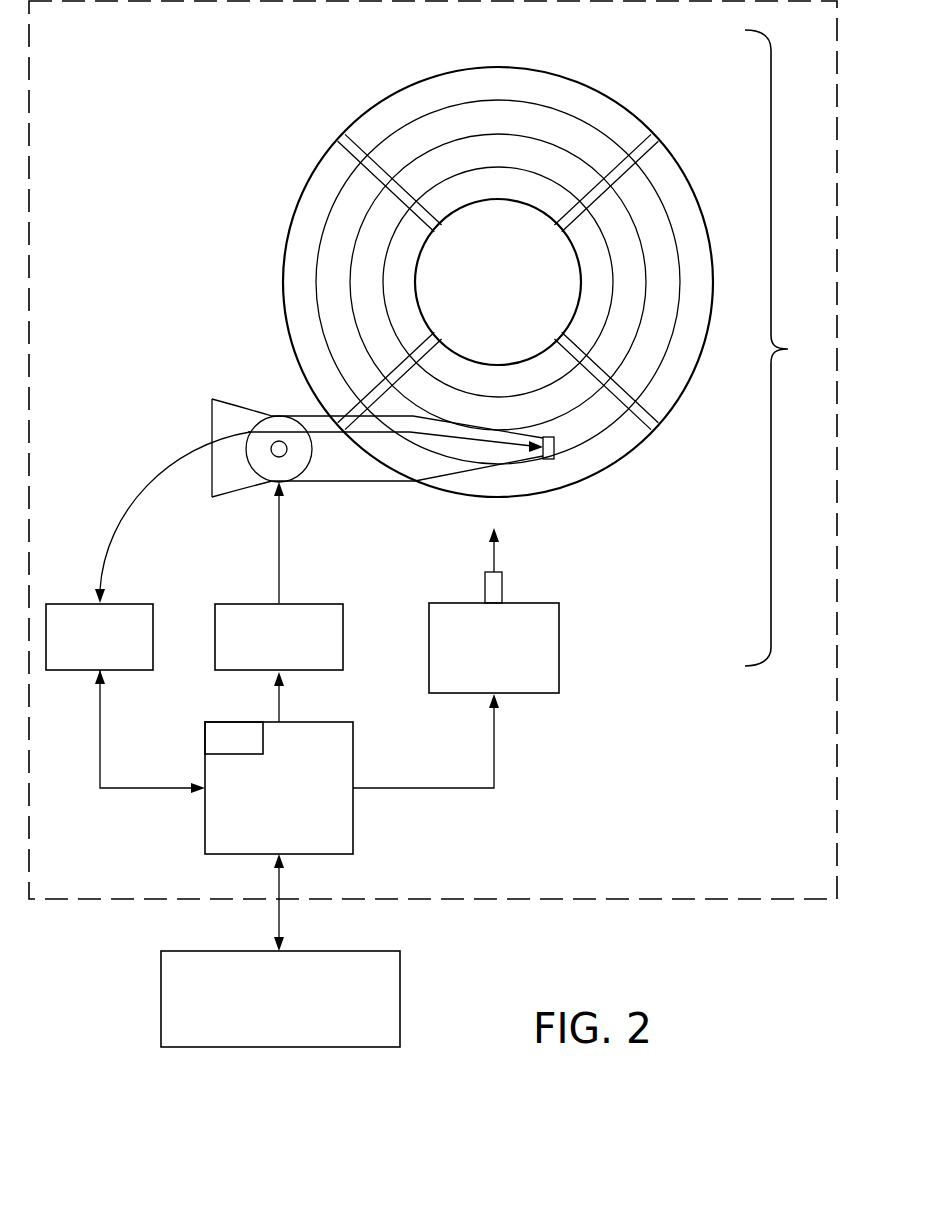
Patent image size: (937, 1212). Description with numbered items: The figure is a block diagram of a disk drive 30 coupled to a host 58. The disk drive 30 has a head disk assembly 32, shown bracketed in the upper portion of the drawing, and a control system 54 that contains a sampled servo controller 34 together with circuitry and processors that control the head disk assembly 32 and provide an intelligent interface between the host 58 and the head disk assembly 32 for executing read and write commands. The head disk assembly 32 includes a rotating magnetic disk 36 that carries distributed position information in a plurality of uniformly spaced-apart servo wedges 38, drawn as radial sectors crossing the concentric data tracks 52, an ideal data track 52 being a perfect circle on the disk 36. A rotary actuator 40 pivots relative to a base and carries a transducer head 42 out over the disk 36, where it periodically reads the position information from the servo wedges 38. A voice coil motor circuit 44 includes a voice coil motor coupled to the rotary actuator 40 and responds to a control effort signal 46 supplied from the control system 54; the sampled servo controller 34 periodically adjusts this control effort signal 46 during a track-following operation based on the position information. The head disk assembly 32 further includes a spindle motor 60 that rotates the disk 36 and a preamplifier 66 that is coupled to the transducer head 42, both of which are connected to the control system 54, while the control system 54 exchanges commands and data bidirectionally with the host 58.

The disk drive 30 is at (722, 899).
The head disk assembly 32 is at (782, 348).
The sampled servo controller 34 is at (234, 738).
The rotating magnetic disk 36 is at (382, 105).
The servo wedges 38 is at (348, 148).
The rotary actuator 40 is at (377, 448).
The transducer head 42 is at (552, 450).
The voice coil motor circuit 44 is at (279, 576).
The control effort signal 46 is at (281, 705).
The data track 52 is at (322, 192).
The control system 54 is at (297, 810).
The host 58 is at (280, 999).
The spindle motor 60 is at (494, 610).
The preamplifier 66 is at (148, 551).